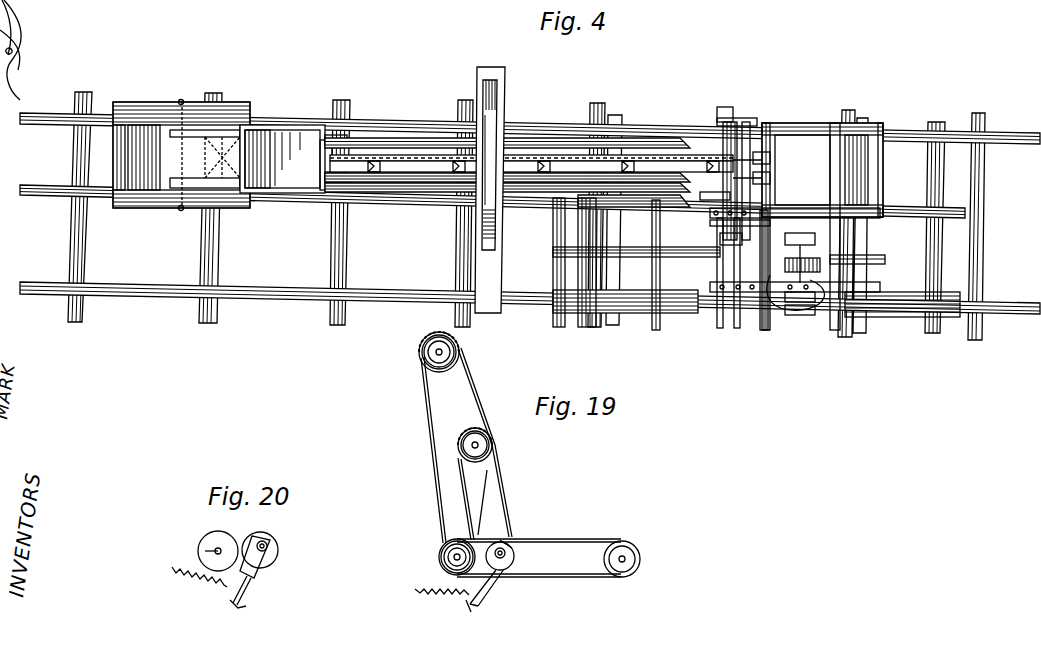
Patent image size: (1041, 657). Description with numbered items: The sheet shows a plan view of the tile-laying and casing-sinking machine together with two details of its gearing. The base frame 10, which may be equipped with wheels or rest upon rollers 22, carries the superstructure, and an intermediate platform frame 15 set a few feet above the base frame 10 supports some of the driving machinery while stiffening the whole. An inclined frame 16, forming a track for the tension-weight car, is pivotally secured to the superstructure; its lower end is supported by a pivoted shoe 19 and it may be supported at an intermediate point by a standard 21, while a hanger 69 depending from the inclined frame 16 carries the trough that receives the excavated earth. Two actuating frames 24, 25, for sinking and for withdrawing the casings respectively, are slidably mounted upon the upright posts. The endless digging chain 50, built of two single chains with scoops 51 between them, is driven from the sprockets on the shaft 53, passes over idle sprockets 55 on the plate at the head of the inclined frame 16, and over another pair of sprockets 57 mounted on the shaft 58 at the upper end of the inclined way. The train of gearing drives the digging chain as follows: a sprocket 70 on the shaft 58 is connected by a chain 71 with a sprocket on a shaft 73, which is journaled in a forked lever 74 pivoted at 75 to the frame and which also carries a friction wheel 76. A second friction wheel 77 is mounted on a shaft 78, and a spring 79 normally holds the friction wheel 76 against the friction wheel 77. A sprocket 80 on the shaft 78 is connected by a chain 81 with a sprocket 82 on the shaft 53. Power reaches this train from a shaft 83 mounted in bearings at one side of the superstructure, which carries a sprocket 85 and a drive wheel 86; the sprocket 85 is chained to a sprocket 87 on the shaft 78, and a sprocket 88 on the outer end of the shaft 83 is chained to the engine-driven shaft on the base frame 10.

In FIG. 4, the base frame 10 is at (672, 312).
In FIG. 4, the intermediate platform frame 15 is at (885, 282).
In FIG. 4, the inclined frame 16 is at (369, 135).
In FIG. 4, the shoe 19 is at (226, 114).
In FIG. 4, the standard 21 is at (504, 102).
In FIG. 4, the rollers 22 is at (614, 121).
In FIG. 4, the actuating frame 24 is at (775, 165).
In FIG. 4, the actuating frame 25 is at (846, 140).
In FIG. 4, the endless digging chain 50 is at (420, 165).
In FIG. 4, the scoops 51 is at (376, 172).
In FIG. 19, the shaft 53 is at (483, 437).
In FIG. 4, the idle sprockets 55 is at (812, 150).
In FIG. 4, the sprockets 57 is at (737, 170).
In FIG. 4, the shaft 58 is at (722, 200).
In FIG. 19, the shaft 58 is at (446, 352).
In FIG. 4, the hanger 69 is at (283, 142).
In FIG. 4, the sprocket 70 is at (736, 226).
In FIG. 19, the sprocket 70 is at (424, 353).
In FIG. 19, the chain 71 is at (430, 400).
In FIG. 19, the shaft 73 is at (508, 555).
In FIG. 20, the shaft 73 is at (258, 538).
In FIG. 20, the forked lever 74 is at (255, 578).
In FIG. 20, the pivot 75 is at (270, 542).
In FIG. 19, the friction wheel 76 is at (505, 546).
In FIG. 20, the friction wheel 76 is at (280, 550).
In FIG. 19, the friction wheel 77 is at (440, 557).
In FIG. 20, the friction wheel 77 is at (210, 541).
In FIG. 4, the shaft 78 is at (714, 292).
In FIG. 19, the shaft 78 is at (446, 546).
In FIG. 20, the shaft 78 is at (212, 552).
In FIG. 19, the spring 79 is at (458, 592).
In FIG. 20, the spring 79 is at (172, 575).
In FIG. 19, the sprocket 80 is at (462, 532).
In FIG. 19, the chain 81 is at (450, 476).
In FIG. 19, the sprocket 82 is at (490, 452).
In FIG. 4, the shaft 83 is at (820, 302).
In FIG. 19, the shaft 83 is at (631, 549).
In FIG. 4, the sprocket 85 is at (800, 274).
In FIG. 19, the sprocket 85 is at (610, 540).
In FIG. 4, the drive wheel 86 is at (776, 268).
In FIG. 4, the sprocket 87 is at (722, 256).
In FIG. 19, the sprocket 87 is at (440, 566).
In FIG. 4, the sprocket 88 is at (790, 290).